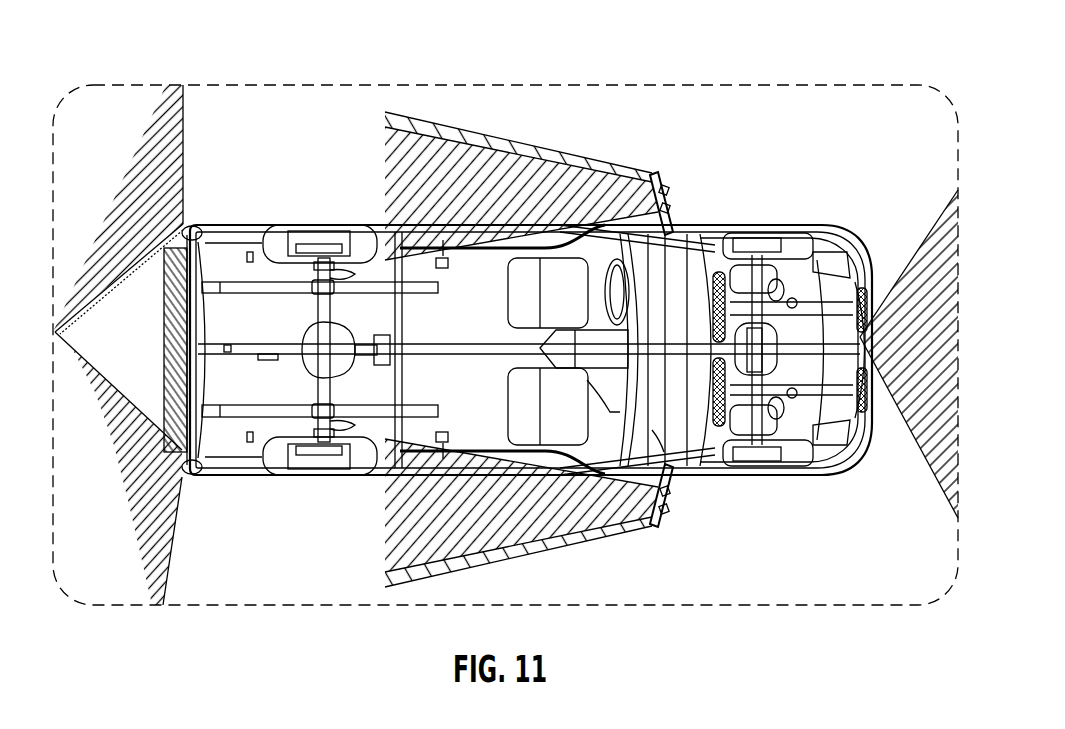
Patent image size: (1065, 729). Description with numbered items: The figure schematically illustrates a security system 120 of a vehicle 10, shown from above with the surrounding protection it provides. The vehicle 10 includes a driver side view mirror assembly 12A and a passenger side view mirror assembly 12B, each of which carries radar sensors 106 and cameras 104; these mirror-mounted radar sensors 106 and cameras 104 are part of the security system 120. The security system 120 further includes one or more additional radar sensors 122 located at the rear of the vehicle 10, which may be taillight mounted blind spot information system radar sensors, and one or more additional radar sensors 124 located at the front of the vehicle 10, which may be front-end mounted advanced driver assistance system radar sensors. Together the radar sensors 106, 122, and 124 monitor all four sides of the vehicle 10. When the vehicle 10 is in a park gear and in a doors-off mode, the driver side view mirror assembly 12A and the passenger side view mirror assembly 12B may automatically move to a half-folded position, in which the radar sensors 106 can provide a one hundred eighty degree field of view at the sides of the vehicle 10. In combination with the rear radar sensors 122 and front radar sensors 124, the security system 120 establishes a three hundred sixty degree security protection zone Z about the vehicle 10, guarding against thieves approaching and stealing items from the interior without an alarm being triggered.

The vehicle 10 is at (727, 122).
The security protection zone Z is at (906, 80).
The driver side view mirror assembly 12A is at (654, 164).
The passenger side view mirror assembly 12B is at (657, 536).
The camera 104 is at (666, 216).
The radar sensor 106 is at (672, 196).
The security system 120 is at (656, 440).
The radar sensor 122 is at (196, 224).
The radar sensor 124 is at (880, 292).